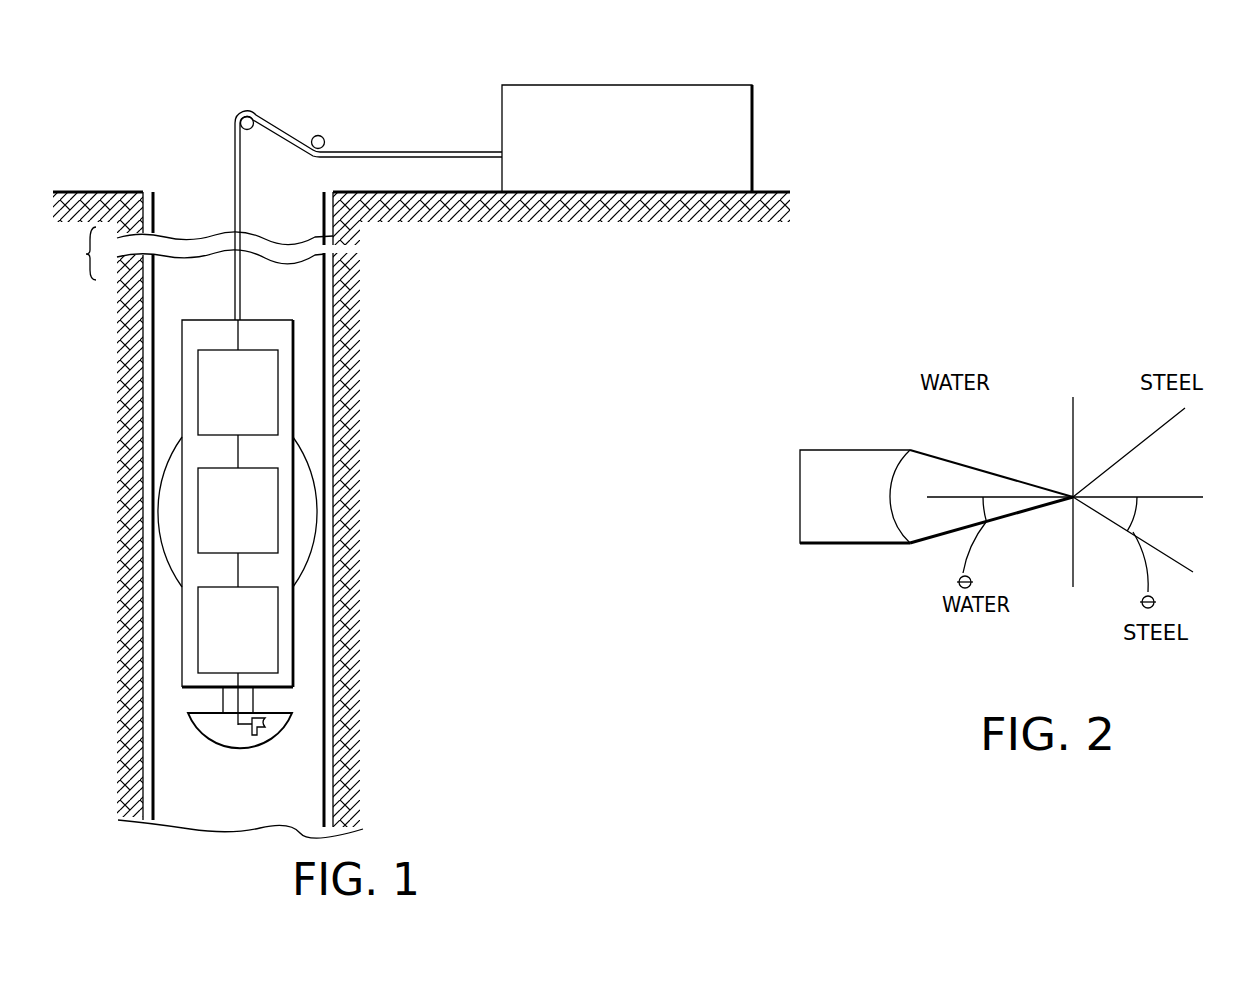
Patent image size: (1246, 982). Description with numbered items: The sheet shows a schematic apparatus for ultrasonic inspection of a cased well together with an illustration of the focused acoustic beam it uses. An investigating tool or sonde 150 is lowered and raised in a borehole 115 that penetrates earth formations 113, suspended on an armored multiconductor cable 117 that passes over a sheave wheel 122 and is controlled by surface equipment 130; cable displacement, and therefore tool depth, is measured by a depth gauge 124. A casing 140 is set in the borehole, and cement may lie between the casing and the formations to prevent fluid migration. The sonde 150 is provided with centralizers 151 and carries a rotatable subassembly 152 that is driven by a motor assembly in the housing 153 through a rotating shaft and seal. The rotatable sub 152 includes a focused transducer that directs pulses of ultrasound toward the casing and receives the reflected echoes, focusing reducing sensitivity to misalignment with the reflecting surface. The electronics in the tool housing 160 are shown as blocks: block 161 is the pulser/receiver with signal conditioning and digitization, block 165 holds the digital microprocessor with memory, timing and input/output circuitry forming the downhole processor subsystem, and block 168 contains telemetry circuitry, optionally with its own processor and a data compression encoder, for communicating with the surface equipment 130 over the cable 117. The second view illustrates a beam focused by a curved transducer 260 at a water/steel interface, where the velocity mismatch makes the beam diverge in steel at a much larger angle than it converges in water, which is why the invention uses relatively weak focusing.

In FIG. 1, the earth formations 113 is at (103, 203).
In FIG. 1, the borehole 115 is at (188, 188).
In FIG. 1, the armored multiconductor cable 117 is at (241, 190).
In FIG. 1, the sheave wheel 122 is at (255, 122).
In FIG. 1, the depth gauge 124 is at (325, 137).
In FIG. 1, the surface equipment 130 is at (730, 117).
In FIG. 1, the casing 140 is at (330, 357).
In FIG. 1, the investigating tool or sonde 150 is at (174, 421).
In FIG. 1, the centralizers 151 is at (162, 480).
In FIG. 1, the rotatable subassembly 152 is at (218, 732).
In FIG. 1, the housing 153 is at (195, 679).
In FIG. 1, the tool housing 160 is at (254, 733).
In FIG. 1, the pulser/receiver block 161 is at (207, 648).
In FIG. 1, the downhole processor subsystem block 165 is at (265, 492).
In FIG. 1, the telemetry circuitry block 168 is at (253, 410).
In FIG. 2, the curved transducer 260 is at (843, 530).